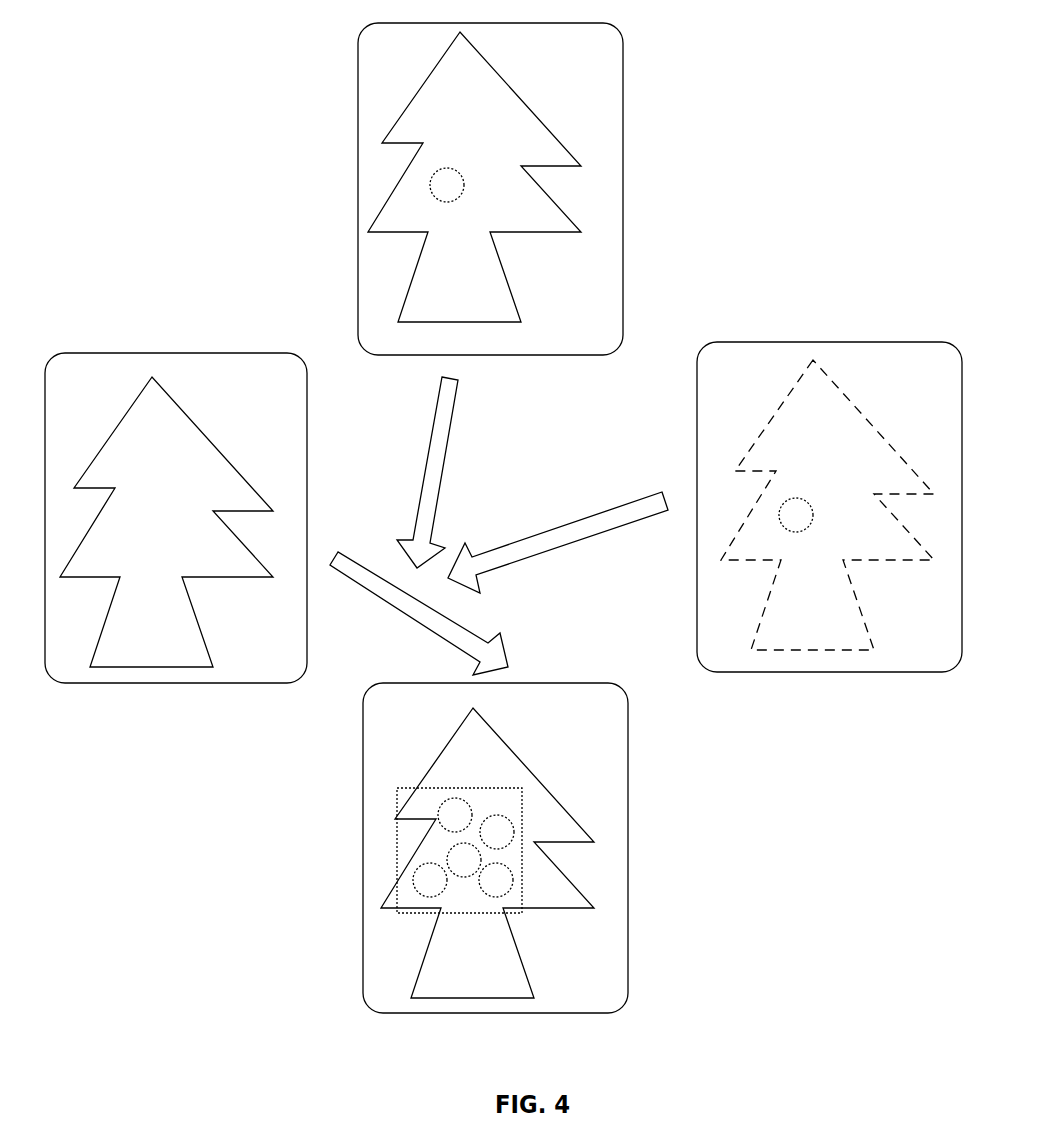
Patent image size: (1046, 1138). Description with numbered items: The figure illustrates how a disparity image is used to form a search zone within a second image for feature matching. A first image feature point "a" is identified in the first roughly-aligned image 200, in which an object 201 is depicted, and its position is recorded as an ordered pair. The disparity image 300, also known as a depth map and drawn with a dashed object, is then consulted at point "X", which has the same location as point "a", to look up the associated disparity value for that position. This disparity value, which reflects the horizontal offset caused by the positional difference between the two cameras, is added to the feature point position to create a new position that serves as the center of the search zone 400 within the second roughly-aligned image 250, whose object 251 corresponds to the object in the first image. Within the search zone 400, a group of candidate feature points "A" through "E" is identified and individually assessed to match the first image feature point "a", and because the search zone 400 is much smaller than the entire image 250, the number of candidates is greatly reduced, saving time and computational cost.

The first roughly-aligned image 200 is at (597, 327).
The object in first image 201 is at (573, 155).
The second roughly-aligned image 250 is at (292, 659).
The object in second image 251 is at (260, 493).
The disparity image 300 is at (934, 646).
The search zone 400 is at (397, 847).